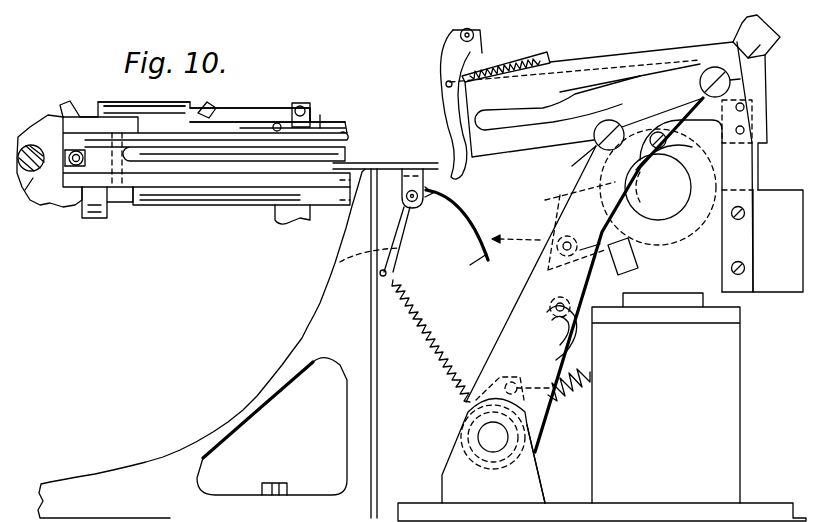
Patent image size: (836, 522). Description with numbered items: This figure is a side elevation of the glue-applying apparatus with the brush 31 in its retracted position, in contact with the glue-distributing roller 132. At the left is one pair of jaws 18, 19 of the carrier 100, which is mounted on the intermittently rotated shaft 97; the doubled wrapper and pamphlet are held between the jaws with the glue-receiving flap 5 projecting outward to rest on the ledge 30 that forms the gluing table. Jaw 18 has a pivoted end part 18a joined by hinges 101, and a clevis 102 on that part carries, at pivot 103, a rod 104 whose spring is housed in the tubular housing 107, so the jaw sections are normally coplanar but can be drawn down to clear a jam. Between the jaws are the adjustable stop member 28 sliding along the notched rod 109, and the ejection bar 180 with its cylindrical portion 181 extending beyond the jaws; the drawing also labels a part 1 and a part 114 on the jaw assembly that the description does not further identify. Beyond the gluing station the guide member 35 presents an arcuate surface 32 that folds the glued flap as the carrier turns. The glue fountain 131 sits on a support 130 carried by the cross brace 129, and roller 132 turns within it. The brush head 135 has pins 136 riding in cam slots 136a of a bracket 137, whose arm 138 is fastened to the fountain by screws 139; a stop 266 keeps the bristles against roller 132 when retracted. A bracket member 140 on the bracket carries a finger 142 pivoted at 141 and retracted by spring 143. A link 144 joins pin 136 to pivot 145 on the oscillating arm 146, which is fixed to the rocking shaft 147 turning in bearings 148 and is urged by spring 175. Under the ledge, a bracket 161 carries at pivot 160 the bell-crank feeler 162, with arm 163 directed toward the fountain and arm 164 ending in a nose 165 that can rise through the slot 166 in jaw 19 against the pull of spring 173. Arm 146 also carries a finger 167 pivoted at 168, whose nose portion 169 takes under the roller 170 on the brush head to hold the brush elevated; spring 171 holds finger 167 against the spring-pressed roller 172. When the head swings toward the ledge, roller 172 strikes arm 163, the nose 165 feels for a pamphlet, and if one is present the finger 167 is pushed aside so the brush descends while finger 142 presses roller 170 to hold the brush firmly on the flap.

The carriage slot 1 is at (225, 200).
The flap 5 is at (396, 165).
The jaw 18 is at (72, 133).
The pivoted end part 18a is at (345, 135).
The jaw 19 is at (205, 195).
The stop member 28 is at (120, 170).
The ledge 30 is at (417, 167).
The brush 31 is at (647, 113).
The arcuate surface 32 is at (302, 340).
The guide member 35 is at (210, 438).
The shaft 97 is at (36, 190).
The carrier 100 is at (52, 208).
The hinge 101 is at (315, 126).
The clevis 102 is at (302, 104).
The pivot 103 is at (312, 118).
The rod 104 is at (275, 120).
The tubular housing 107 is at (104, 102).
The notched rod 109 is at (250, 200).
The lug 114 is at (210, 104).
The cross brace 129 is at (705, 492).
The support 130 is at (742, 393).
The glue fountain 131 is at (712, 258).
The glue-distributing roller 132 is at (705, 167).
The brush head 135 is at (735, 30).
The pin 136 is at (735, 80).
The cam slot 136a is at (532, 103).
The bracket 137 is at (627, 48).
The arm 138 is at (744, 177).
The screw 139 is at (747, 213).
The bracket member 140 is at (478, 46).
The pivot 141 is at (455, 36).
The finger 142 is at (452, 103).
The spring 143 is at (512, 64).
The link 144 is at (623, 106).
The pivot 145 is at (596, 144).
The oscillating arm 146 is at (498, 351).
The rocking shaft 147 is at (478, 441).
The bearing 148 is at (534, 471).
The pivot 160 is at (414, 203).
The bracket 161 is at (435, 191).
The feeler 162 is at (465, 200).
The arm 163 is at (478, 240).
The arm 164 is at (394, 276).
The nose 165 is at (345, 262).
The slot 166 is at (280, 212).
The finger 167 is at (585, 200).
The pivot 168 is at (548, 298).
The nose portion 169 is at (585, 168).
The roller 170 is at (658, 150).
The spring 171 is at (560, 345).
The spring-pressed roller 172 is at (556, 252).
The spring 173 is at (434, 354).
The spring 175 is at (596, 386).
The ejection bar 180 is at (82, 150).
The cylindrical portion 181 is at (72, 152).
The stop 266 is at (764, 52).